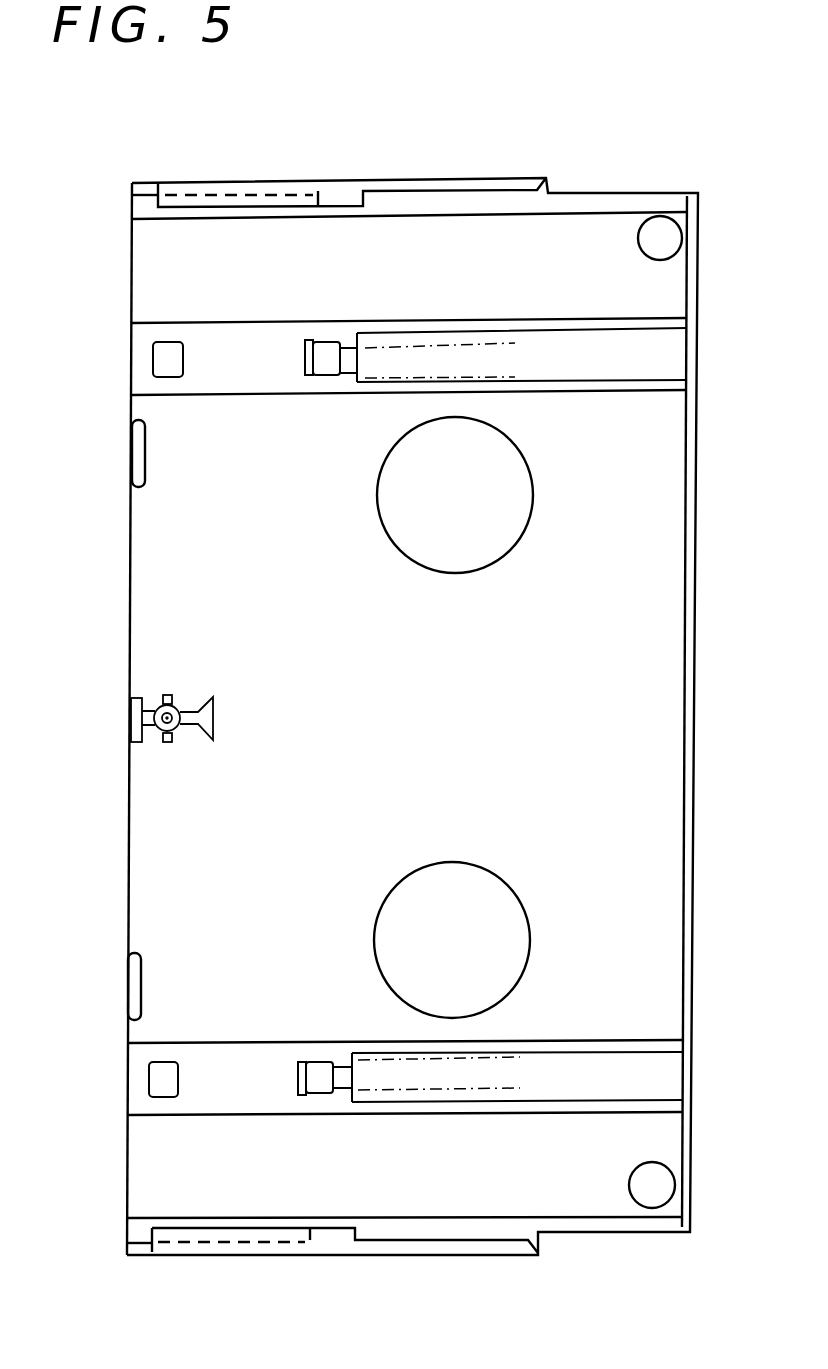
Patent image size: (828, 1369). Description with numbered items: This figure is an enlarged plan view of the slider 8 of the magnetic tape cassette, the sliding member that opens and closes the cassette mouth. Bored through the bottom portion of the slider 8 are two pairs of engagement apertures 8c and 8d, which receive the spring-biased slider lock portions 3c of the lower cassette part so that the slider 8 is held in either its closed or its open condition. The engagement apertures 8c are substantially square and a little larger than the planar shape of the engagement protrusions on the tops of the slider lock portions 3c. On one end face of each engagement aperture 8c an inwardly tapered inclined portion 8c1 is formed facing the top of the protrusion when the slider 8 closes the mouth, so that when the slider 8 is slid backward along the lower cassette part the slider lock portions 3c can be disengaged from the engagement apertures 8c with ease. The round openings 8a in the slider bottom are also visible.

The slider 8 is at (645, 180).
The opening (hole) in chassis 8a is at (528, 512).
The slider lock portion 3c is at (457, 353).
The engagement aperture 8c is at (328, 342).
The inclined portion 8c1 is at (305, 352).
The engagement aperture 8d is at (163, 342).